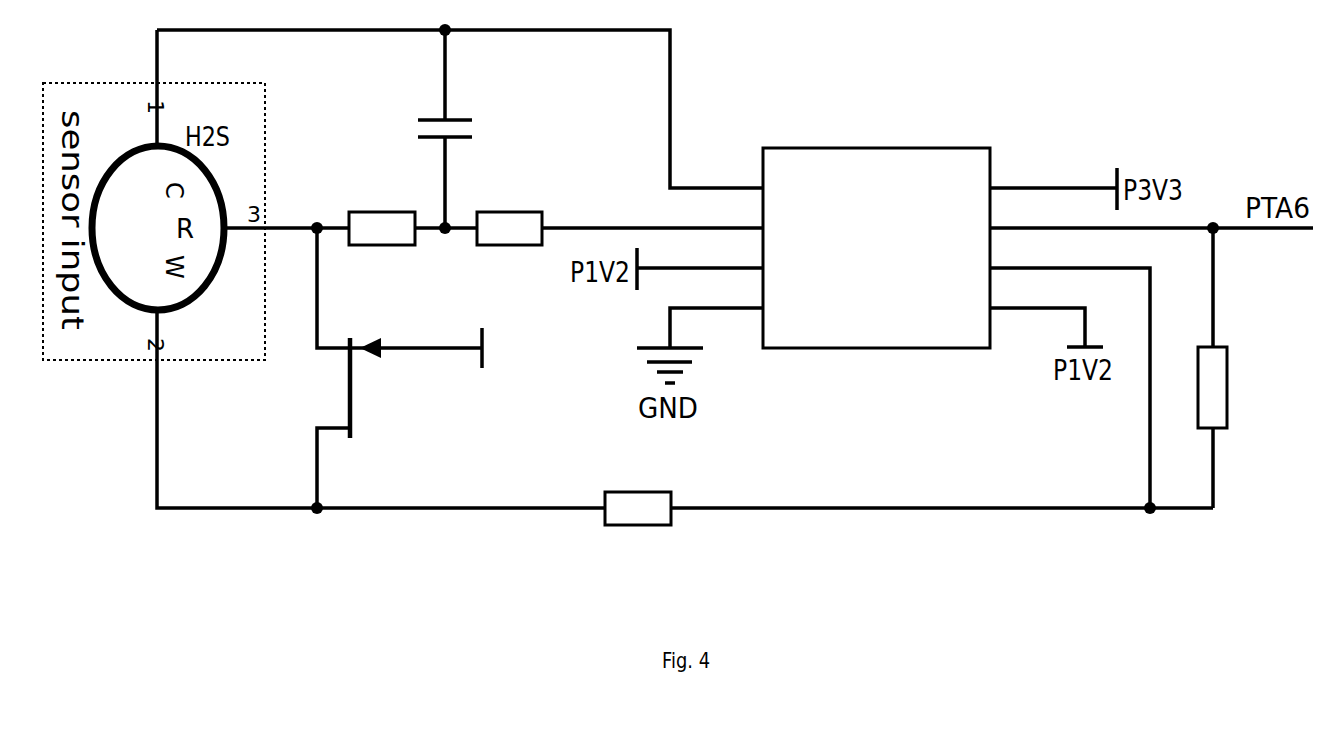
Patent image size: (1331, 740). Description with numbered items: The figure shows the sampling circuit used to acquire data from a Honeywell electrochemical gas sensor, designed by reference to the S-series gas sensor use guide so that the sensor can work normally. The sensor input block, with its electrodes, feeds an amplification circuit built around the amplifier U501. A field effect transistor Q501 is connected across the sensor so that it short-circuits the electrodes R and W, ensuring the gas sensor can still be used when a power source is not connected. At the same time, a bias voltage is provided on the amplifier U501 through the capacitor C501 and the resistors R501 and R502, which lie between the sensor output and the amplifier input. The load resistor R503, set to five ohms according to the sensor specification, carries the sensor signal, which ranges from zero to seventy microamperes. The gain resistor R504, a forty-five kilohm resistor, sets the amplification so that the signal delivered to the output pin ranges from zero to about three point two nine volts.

The capacitor C501 is at (450, 129).
The resistor R501 is at (381, 231).
The resistor R502 is at (509, 231).
The load resistor R503 is at (638, 508).
The gain resistor R504 is at (1241, 368).
The field effect transistor Q501 is at (400, 368).
The amplifier U501 is at (878, 267).